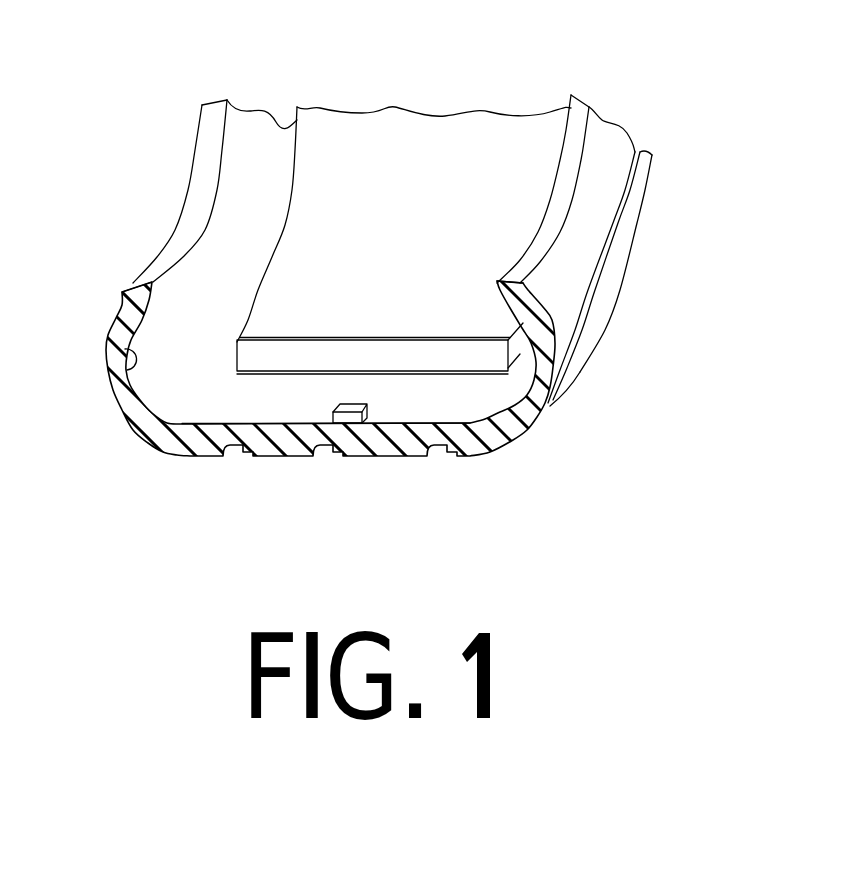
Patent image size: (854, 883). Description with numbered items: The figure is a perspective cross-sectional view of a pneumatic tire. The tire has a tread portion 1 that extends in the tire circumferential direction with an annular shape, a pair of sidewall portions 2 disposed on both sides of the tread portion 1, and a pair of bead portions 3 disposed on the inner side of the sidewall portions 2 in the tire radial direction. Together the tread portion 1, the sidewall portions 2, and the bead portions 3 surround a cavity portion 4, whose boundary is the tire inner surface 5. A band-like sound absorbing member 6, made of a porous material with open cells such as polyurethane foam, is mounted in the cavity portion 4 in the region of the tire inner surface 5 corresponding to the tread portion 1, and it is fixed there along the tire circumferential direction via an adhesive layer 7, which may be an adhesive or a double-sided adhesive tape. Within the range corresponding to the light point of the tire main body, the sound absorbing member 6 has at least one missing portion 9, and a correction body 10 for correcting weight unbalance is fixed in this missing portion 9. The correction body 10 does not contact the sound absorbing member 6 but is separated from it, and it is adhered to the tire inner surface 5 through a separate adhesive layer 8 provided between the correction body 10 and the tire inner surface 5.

The tread portion 1 is at (292, 458).
The sidewall portions 2 is at (107, 385).
The bead portions 3 is at (122, 303).
The cavity portion 4 is at (217, 265).
The tire inner surface 5 is at (106, 357).
The sound absorbing member 6 is at (428, 170).
The adhesive layer 7 is at (418, 373).
The adhesive layer 8 is at (343, 423).
The missing portion 9 is at (250, 402).
The correction body 10 is at (330, 405).